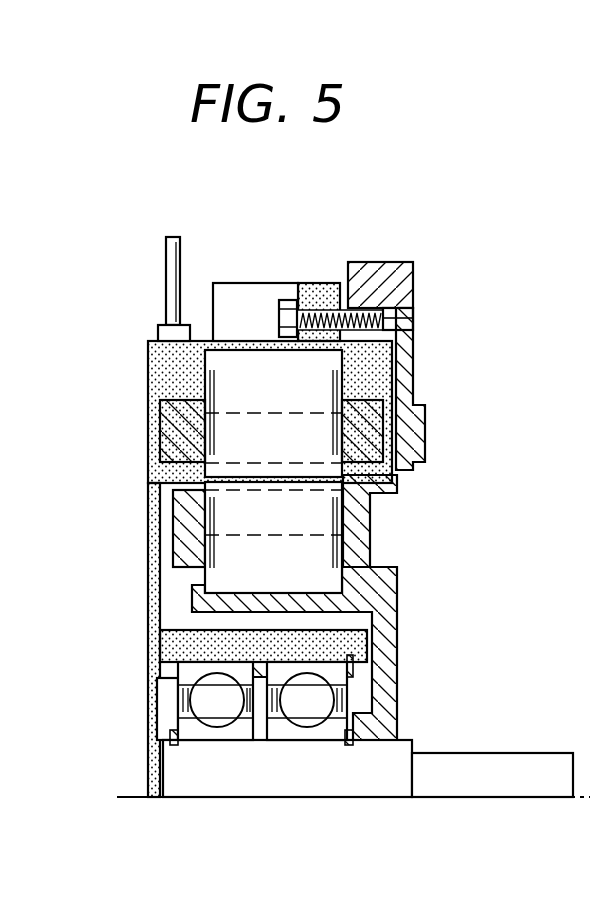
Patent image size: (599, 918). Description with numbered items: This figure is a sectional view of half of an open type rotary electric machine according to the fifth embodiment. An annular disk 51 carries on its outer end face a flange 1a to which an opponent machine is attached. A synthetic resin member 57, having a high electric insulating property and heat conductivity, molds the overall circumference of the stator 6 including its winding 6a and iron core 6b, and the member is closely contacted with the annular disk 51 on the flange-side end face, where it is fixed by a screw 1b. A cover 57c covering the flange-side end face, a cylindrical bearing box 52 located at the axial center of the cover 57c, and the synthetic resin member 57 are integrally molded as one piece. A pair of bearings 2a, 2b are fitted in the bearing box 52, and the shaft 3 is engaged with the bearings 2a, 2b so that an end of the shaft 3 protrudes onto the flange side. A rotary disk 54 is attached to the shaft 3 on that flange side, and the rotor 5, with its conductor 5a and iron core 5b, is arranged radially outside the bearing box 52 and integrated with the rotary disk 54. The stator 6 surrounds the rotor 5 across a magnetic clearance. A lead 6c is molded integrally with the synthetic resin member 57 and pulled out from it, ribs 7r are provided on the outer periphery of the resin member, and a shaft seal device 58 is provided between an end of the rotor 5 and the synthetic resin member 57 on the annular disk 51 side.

The flange 1a is at (415, 355).
The screw 1b is at (290, 312).
The bearing 2a is at (305, 716).
The bearing 2b is at (210, 712).
The shaft 3 is at (492, 767).
The rotor 5 is at (75, 445).
The conductor 5a is at (180, 505).
The iron core 5b is at (217, 557).
The stator 6 is at (510, 365).
The winding 6a is at (373, 432).
The iron core 6b is at (322, 390).
The lead 6c is at (165, 267).
The rib 7r is at (237, 305).
The annular disk 51 is at (388, 278).
The cylindrical bearing box 52 is at (187, 635).
The rotary disk 54 is at (395, 605).
The synthetic resin member 57 is at (158, 362).
The cover 57c is at (148, 717).
The shaft seal device 58 is at (395, 488).